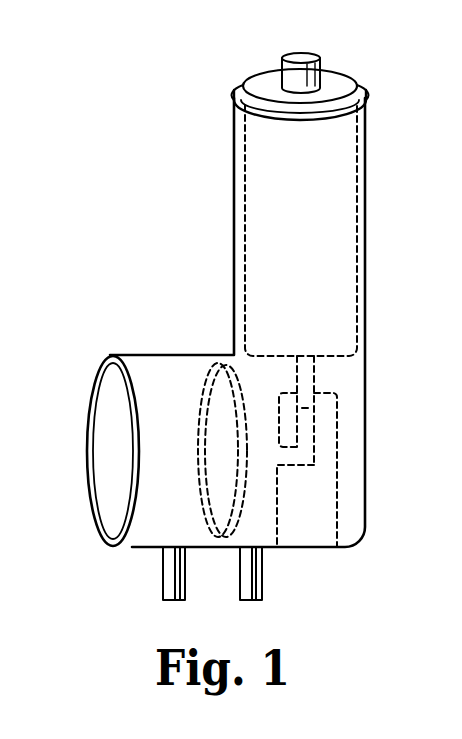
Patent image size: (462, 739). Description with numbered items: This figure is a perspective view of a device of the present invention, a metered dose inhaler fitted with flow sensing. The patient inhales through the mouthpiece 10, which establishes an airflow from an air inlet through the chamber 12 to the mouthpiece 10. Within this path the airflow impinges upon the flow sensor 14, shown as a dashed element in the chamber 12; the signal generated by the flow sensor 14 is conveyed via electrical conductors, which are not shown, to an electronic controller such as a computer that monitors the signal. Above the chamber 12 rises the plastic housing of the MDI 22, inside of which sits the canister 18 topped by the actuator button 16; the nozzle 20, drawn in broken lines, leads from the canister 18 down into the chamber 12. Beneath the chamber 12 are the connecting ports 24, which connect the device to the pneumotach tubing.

The mouthpiece 10 is at (96, 374).
The chamber 12 is at (153, 517).
The flow sensor 14 is at (203, 388).
The actuator button 16 is at (300, 57).
The canister 18 is at (357, 89).
The nozzle 20 is at (318, 375).
The plastic housing of the MDI 22 is at (366, 433).
The connecting ports 24 is at (245, 570).